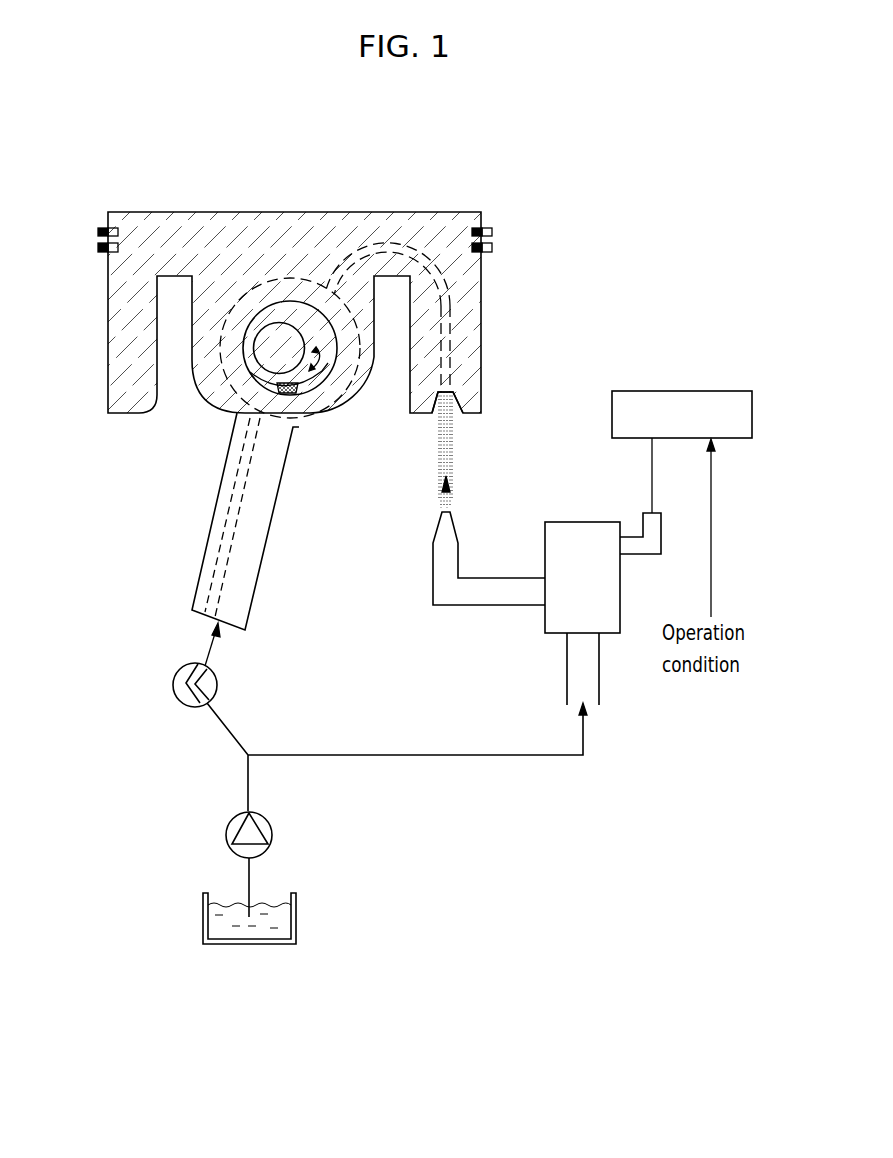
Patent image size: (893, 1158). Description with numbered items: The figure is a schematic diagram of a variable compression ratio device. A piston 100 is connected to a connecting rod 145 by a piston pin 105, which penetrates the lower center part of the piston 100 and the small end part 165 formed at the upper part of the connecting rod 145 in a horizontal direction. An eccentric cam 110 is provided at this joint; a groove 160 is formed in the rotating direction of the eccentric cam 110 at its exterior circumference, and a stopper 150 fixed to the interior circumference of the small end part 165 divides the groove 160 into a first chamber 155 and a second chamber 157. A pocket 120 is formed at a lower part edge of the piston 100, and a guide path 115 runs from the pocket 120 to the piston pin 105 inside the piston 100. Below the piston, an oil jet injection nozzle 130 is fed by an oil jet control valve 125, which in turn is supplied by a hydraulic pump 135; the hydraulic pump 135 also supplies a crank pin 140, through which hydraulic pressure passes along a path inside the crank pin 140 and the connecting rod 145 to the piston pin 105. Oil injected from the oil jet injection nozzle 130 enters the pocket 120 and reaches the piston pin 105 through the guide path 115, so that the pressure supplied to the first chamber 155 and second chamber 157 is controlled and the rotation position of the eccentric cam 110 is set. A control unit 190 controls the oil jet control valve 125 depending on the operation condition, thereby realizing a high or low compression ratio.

The piston 100 is at (108, 330).
The piston pin 105 is at (263, 309).
The eccentric cam 110 is at (272, 333).
The guide path 115 is at (450, 308).
The pocket 120 is at (462, 410).
The oil jet control valve 125 is at (590, 522).
The oil jet injection nozzle 130 is at (437, 533).
The hydraulic pump 135 is at (228, 836).
The crank pin 140 is at (173, 690).
The connecting rod 145 is at (197, 590).
The stopper 150 is at (299, 428).
The first chamber 155 is at (276, 396).
The second chamber 157 is at (328, 400).
The groove 160 is at (326, 413).
The small end part 165 is at (244, 310).
The control unit 190 is at (690, 391).